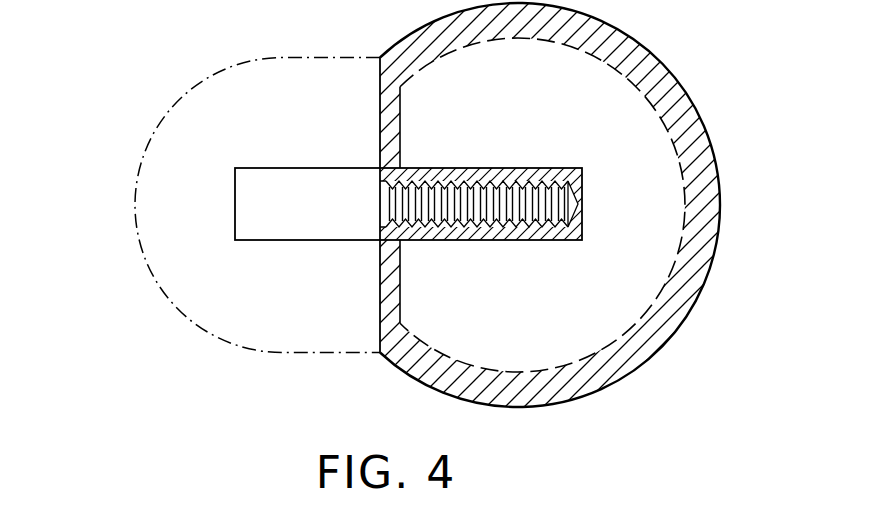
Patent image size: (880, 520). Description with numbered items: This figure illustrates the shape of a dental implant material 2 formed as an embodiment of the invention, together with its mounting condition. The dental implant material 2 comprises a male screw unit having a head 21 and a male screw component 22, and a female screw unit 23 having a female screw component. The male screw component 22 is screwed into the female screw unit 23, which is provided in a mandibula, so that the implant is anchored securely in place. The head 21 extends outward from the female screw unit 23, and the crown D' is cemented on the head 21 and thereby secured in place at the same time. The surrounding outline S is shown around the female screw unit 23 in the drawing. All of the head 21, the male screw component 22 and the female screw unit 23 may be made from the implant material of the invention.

The dental implant material 2 is at (305, 185).
The head 21 is at (304, 241).
The male screw component 22 is at (521, 176).
The female screw unit 23 is at (483, 241).
The shell S is at (714, 252).
The crown D' is at (204, 205).